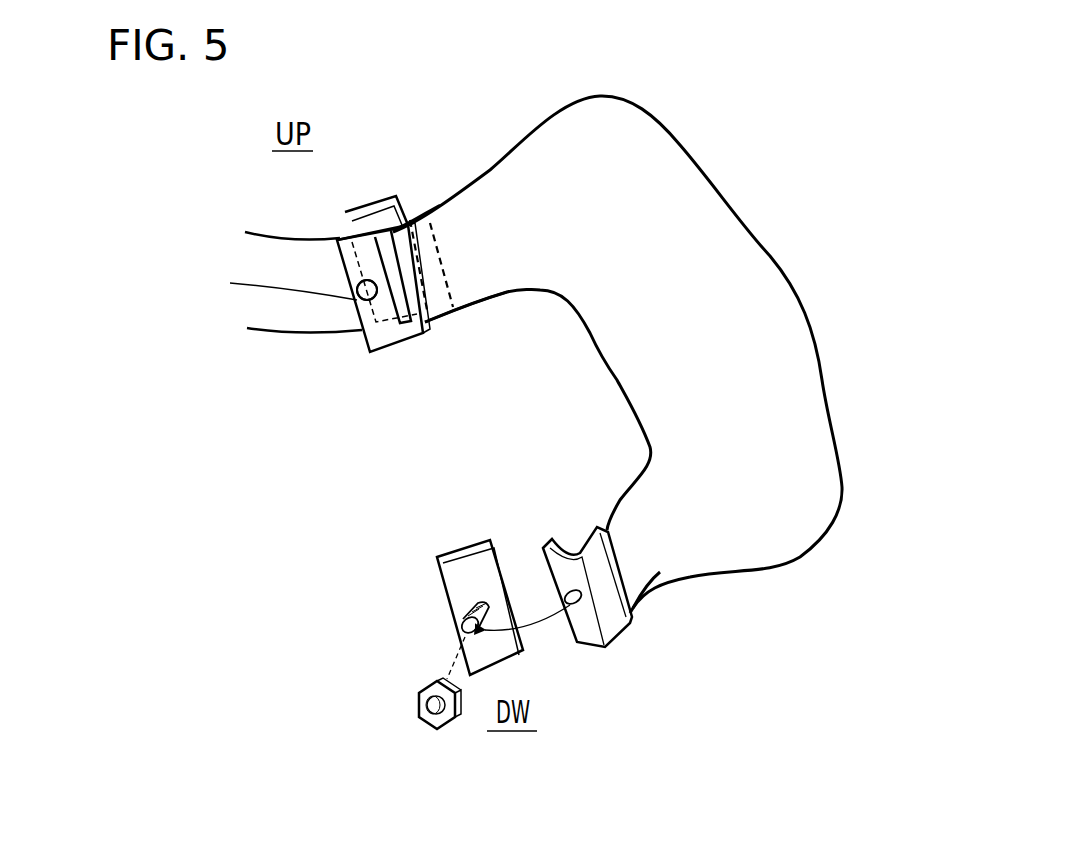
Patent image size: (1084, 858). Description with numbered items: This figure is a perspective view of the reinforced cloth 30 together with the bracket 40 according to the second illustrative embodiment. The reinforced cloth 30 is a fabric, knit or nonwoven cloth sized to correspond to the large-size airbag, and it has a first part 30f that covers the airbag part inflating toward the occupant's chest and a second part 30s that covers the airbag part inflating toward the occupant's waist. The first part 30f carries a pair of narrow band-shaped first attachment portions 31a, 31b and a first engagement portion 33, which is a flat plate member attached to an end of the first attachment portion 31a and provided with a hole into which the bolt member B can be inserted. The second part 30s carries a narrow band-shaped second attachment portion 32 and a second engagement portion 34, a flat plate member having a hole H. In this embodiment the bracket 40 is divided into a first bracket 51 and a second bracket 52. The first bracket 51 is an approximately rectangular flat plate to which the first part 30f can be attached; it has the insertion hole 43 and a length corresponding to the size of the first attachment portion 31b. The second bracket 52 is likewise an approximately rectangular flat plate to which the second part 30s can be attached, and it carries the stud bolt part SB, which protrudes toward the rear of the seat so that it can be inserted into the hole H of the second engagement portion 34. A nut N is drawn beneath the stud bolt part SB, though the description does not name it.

The reinforced cloth 30 is at (777, 258).
The first part 30f is at (634, 171).
The second part 30s is at (801, 513).
The first attachment portion 31a is at (303, 253).
The first attachment portion 31b is at (467, 235).
The second attachment portion 32 is at (643, 563).
The first engagement portion 33 is at (352, 203).
The second engagement portion 34 is at (582, 617).
The bracket 40 is at (328, 413).
The insertion hole 43 is at (256, 287).
The bolt member B is at (356, 297).
The first bracket 51 is at (282, 301).
The second bracket 52 is at (428, 605).
The stud bolt part SB is at (466, 612).
The nut N is at (416, 703).
The hole H is at (574, 605).